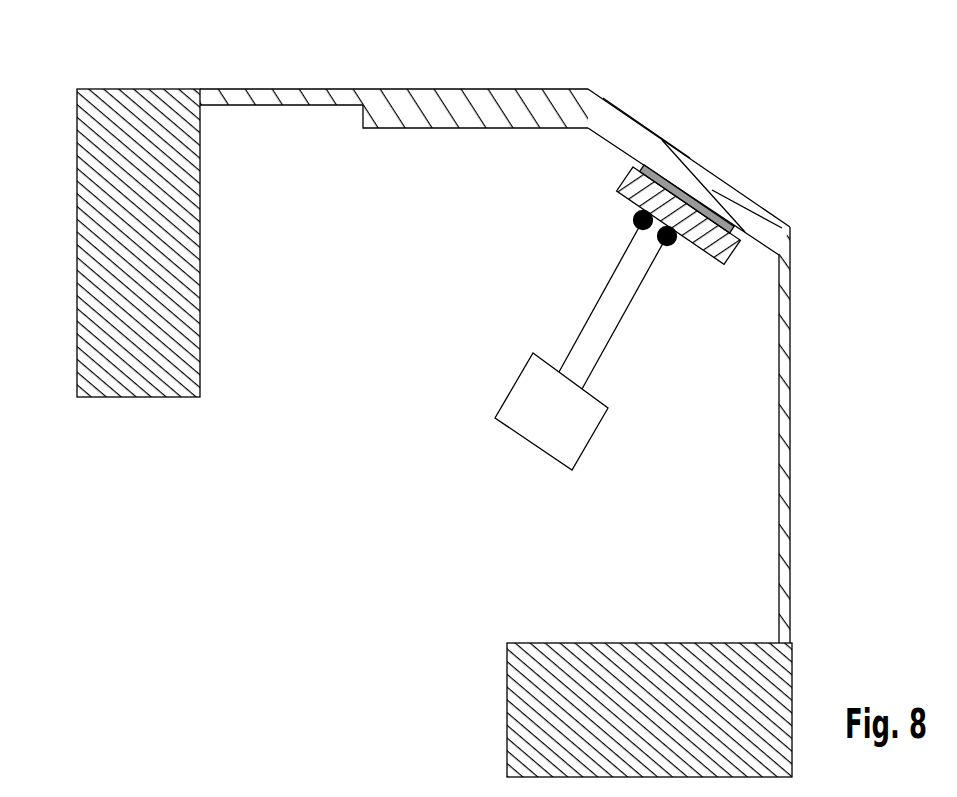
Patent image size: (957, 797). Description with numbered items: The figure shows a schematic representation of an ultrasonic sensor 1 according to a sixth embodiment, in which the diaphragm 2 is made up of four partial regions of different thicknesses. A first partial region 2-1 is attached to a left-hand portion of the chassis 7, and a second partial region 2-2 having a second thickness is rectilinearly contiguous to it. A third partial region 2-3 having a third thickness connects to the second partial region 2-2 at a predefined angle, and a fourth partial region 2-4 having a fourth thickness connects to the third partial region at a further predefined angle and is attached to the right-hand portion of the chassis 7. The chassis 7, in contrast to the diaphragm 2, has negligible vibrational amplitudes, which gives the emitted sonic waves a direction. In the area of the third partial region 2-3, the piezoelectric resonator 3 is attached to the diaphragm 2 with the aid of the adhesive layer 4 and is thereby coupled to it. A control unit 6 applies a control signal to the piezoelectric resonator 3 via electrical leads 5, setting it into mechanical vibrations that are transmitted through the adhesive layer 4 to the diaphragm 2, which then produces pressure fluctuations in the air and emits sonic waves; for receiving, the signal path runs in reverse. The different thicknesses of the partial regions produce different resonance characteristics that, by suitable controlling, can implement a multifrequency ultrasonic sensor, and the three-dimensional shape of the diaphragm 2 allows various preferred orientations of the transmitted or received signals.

The ultrasonic sensor 1 is at (226, 68).
The diaphragm 2 is at (547, 366).
The first partial region 2-1 is at (320, 145).
The second partial region 2-2 is at (432, 113).
The third partial region 2-3 is at (704, 108).
The fourth partial region 2-4 is at (872, 428).
The piezoelectric resonator 3 is at (691, 247).
The adhesive layer 4 is at (745, 235).
The electrical leads 5 is at (607, 343).
The control unit 6 is at (577, 435).
The chassis 7 is at (185, 252).